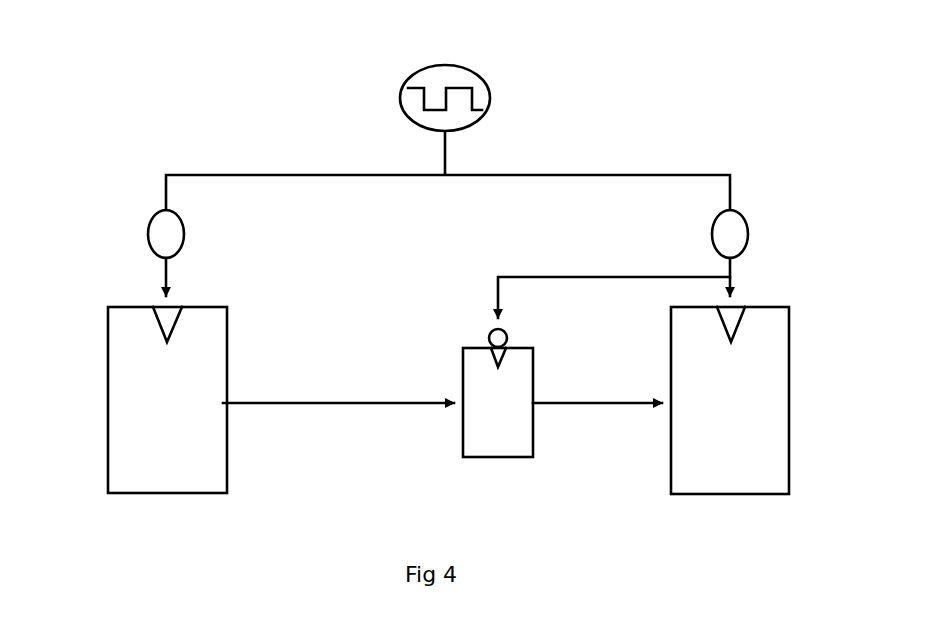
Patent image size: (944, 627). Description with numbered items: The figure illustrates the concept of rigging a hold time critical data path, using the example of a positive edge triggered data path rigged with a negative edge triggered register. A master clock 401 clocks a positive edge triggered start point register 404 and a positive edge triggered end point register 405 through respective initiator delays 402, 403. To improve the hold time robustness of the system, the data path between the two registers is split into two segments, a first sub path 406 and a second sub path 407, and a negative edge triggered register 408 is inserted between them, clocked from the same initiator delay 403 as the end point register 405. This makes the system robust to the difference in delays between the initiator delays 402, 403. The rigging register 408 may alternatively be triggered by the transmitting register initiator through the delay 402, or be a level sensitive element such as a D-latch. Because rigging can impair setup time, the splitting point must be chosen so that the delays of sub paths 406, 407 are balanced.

The master clock 401 is at (408, 97).
The initiator delay 402 is at (148, 238).
The initiator delay 403 is at (749, 237).
The start point register 404 is at (115, 372).
The end point register 405 is at (785, 360).
The data path segment 406 is at (410, 403).
The data path segment 407 is at (645, 403).
The negative edge triggered register 408 is at (500, 457).